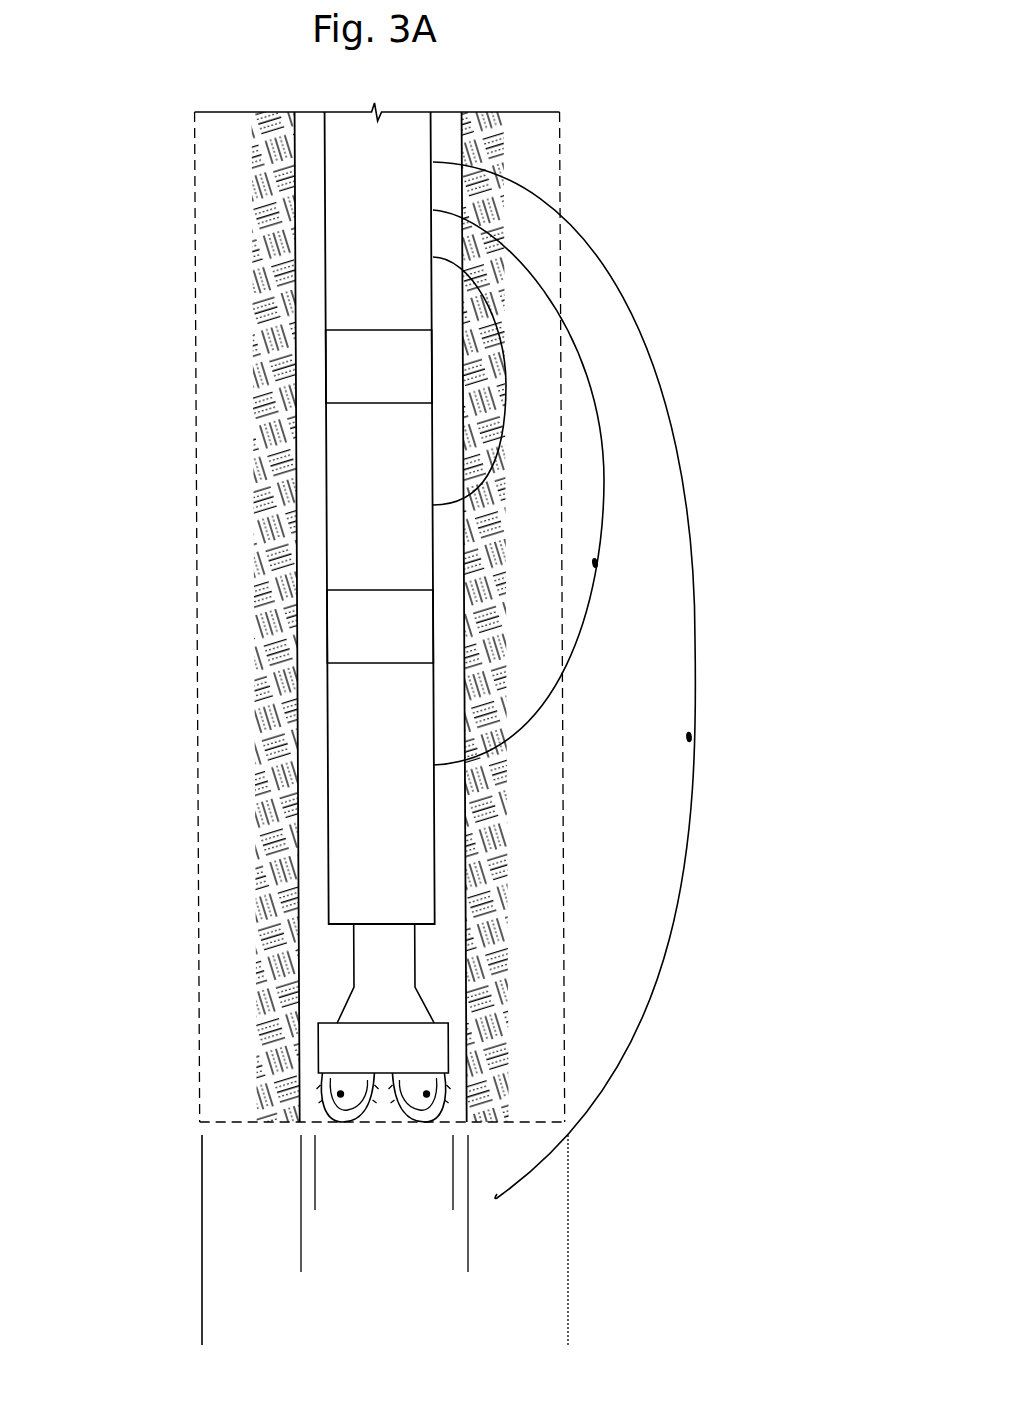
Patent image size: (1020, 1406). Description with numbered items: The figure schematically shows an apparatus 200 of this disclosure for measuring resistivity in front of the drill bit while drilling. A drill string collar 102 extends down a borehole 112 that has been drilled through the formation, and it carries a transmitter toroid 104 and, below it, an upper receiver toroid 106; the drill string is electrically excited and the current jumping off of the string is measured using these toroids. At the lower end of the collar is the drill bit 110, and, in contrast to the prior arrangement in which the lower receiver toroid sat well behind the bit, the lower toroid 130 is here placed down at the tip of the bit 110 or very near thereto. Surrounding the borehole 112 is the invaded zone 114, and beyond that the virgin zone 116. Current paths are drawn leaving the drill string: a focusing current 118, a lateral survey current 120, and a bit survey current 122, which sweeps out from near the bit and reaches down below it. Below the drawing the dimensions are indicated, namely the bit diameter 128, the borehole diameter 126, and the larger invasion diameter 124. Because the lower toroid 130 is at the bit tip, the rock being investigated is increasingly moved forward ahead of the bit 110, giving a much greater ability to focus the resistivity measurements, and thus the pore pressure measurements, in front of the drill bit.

The apparatus 200 is at (657, 142).
The drill string collar 102 is at (342, 169).
The transmitter toroid 104 is at (402, 377).
The upper receiver toroid 106 is at (405, 638).
The drill bit 110 is at (338, 1086).
The borehole 112 is at (313, 263).
The invaded zone 114 is at (230, 347).
The virgin zone 116 is at (148, 432).
The focusing current 118 is at (482, 297).
The lateral survey current 120 is at (607, 468).
The bit survey current 122 is at (697, 650).
The invasion diameter 124 is at (567, 1332).
The borehole diameter 126 is at (467, 1262).
The bit diameter 128 is at (452, 1199).
The lower toroid 130 is at (402, 1063).